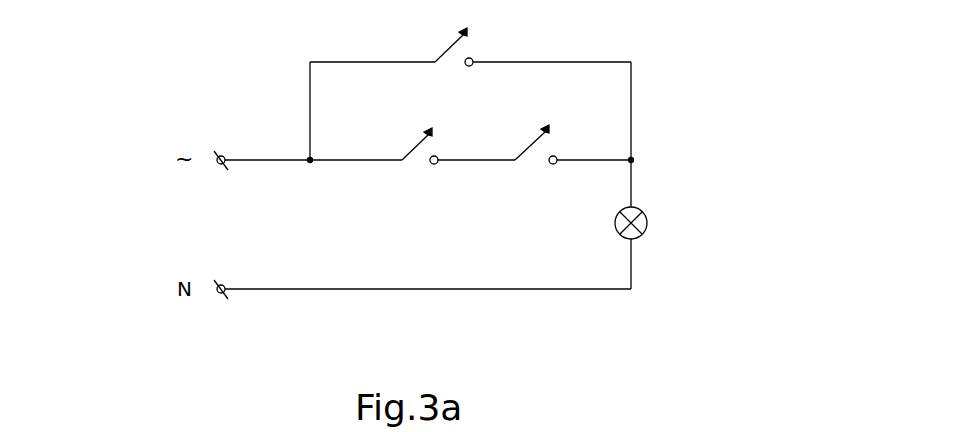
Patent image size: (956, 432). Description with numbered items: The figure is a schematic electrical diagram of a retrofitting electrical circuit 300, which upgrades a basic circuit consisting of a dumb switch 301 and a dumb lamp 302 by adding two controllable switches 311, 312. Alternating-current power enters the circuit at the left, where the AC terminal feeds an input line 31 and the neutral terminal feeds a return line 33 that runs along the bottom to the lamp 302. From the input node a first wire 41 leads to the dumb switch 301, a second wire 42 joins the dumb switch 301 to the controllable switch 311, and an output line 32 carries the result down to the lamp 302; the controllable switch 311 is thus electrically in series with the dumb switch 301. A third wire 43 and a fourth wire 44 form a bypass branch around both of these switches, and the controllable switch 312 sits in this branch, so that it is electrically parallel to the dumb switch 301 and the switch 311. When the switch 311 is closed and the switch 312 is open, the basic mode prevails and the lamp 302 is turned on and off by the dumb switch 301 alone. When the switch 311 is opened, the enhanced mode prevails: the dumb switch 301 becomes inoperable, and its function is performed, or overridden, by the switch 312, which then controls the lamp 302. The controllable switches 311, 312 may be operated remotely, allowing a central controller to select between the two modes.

The retrofitting electrical circuit 300 is at (678, 312).
The input line 31 is at (268, 157).
The output line 32 is at (576, 158).
The neutral line 33 is at (428, 290).
The first wire 41 is at (358, 161).
The second wire 42 is at (480, 161).
The third wire 43 is at (372, 61).
The fourth wire 44 is at (557, 61).
The dumb switch 301 is at (424, 142).
The controllable switch 311 is at (543, 140).
The controllable switch 312 is at (457, 45).
The dumb lamp 302 is at (648, 225).